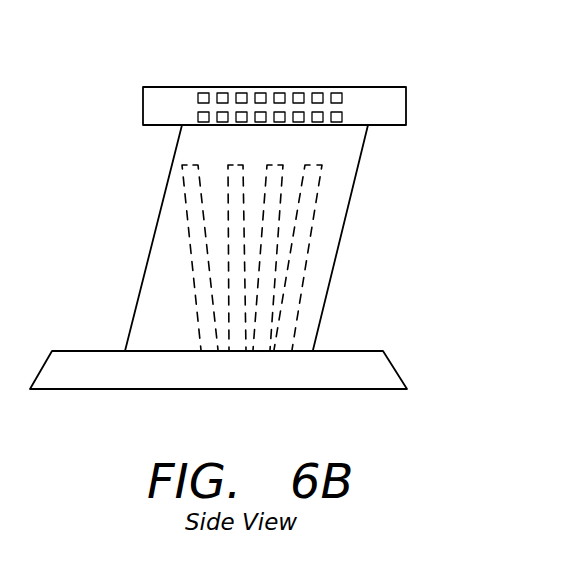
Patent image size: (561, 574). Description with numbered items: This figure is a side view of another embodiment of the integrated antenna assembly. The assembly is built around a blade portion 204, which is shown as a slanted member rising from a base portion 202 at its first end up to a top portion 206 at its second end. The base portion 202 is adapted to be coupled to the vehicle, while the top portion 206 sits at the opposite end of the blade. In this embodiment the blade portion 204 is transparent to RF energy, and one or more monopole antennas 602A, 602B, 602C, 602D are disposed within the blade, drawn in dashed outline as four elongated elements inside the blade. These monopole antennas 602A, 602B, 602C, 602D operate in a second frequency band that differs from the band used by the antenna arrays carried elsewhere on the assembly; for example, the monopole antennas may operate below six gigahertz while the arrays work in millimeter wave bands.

The top portion 206 is at (406, 98).
The blade portion 204 is at (152, 228).
The base portion 202 is at (390, 362).
The monopole antenna 602A is at (185, 188).
The monopole antenna 602B is at (238, 160).
The monopole antenna 602C is at (273, 162).
The monopole antenna 602D is at (318, 197).